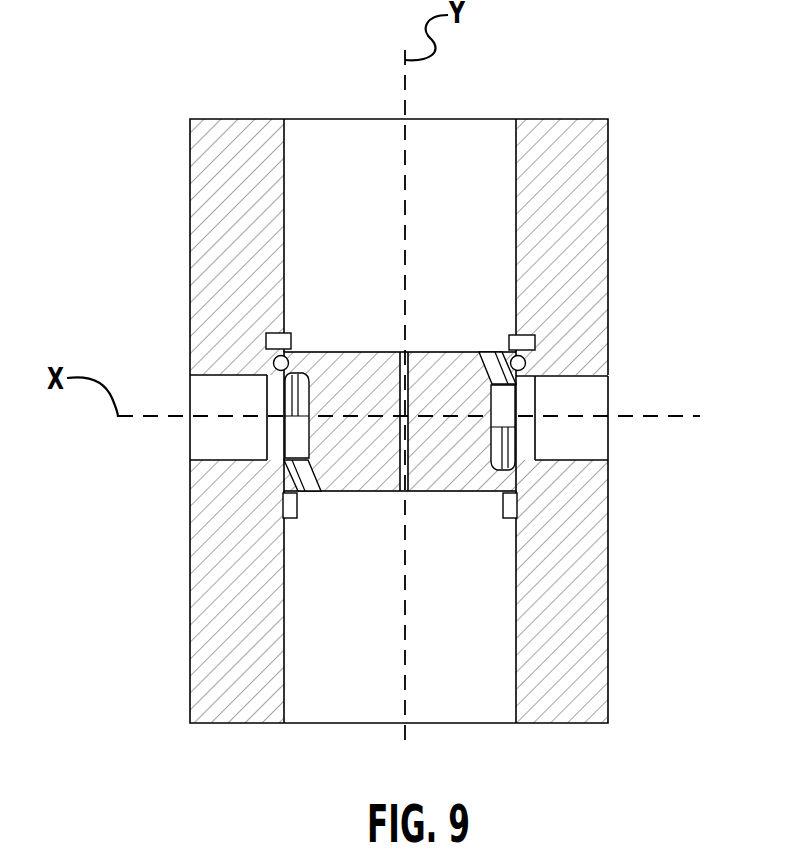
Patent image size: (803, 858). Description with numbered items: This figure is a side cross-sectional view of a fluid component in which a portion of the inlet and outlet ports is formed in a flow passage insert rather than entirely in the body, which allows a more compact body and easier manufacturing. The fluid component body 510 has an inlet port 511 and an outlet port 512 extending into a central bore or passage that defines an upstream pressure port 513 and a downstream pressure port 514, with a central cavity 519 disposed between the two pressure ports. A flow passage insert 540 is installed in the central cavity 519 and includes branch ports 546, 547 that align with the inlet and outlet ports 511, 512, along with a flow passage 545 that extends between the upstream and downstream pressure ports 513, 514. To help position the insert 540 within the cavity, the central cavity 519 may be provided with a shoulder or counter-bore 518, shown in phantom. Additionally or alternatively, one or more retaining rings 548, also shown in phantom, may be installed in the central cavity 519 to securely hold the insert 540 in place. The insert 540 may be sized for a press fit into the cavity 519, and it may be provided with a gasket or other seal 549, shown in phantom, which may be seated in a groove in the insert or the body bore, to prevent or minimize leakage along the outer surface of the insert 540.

The fluid component body 510 is at (114, 231).
The inlet port 511 is at (222, 376).
The outlet port 512 is at (578, 377).
The upstream pressure port 513 is at (287, 547).
The downstream pressure port 514 is at (517, 233).
The shoulder or counter-bore 518 is at (290, 507).
The central cavity 519 is at (484, 522).
The flow passage insert 540 is at (446, 368).
The flow passage 545 is at (400, 428).
The branch port 546 is at (300, 478).
The branch port 547 is at (483, 375).
The retaining ring 548 is at (271, 347).
The gasket or seal 549 is at (288, 378).